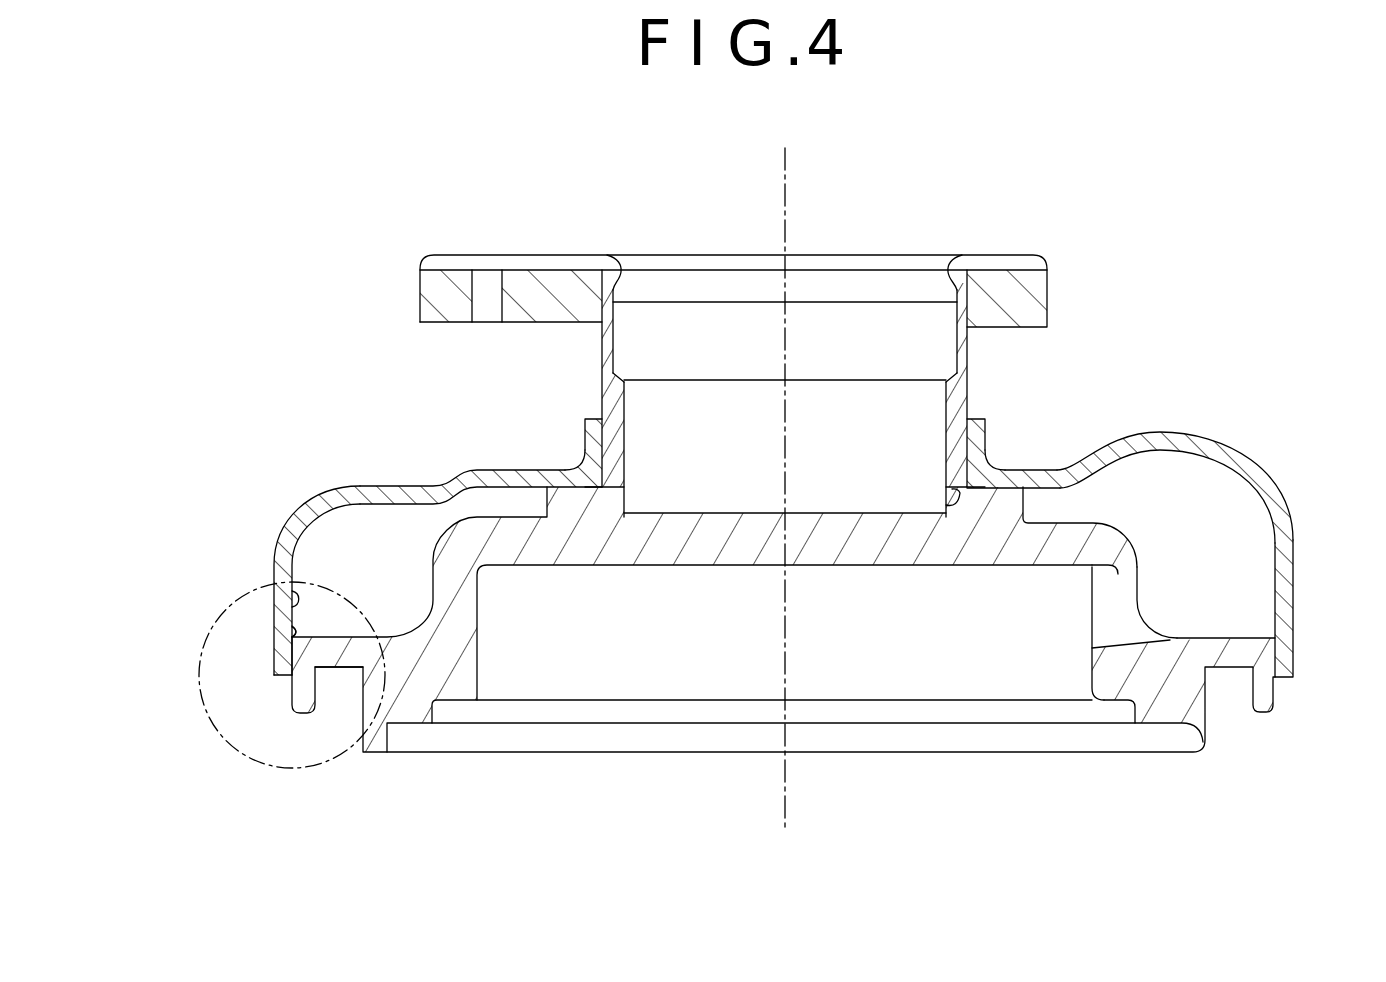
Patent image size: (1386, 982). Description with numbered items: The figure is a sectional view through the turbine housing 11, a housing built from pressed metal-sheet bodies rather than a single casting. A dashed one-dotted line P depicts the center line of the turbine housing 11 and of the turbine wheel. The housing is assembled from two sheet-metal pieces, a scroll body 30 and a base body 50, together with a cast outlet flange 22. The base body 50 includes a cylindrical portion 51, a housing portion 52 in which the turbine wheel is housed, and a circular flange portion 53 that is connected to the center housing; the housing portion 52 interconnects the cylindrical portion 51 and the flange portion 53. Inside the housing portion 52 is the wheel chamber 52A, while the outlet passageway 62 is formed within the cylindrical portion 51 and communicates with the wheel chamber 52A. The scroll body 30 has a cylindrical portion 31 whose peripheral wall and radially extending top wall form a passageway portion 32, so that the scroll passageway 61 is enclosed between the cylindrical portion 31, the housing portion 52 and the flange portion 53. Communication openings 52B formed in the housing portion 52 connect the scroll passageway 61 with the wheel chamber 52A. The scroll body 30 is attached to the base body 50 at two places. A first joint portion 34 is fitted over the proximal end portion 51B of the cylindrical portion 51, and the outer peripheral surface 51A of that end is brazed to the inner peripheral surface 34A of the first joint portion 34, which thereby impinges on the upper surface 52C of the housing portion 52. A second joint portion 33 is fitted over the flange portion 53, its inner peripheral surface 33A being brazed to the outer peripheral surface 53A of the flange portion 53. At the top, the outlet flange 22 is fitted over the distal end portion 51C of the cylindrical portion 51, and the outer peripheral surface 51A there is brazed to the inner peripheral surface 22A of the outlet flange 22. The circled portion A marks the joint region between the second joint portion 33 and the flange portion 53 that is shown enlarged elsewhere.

The turbine housing 11 is at (1200, 295).
The outlet flange 22 is at (765, 257).
The inner peripheral surface of the outlet flange 22A is at (607, 256).
The scroll body 30 is at (753, 520).
The cylindrical portion of the scroll body 31 is at (1170, 432).
The passageway portion 32 is at (1296, 598).
The second joint portion 33 is at (274, 655).
The inner peripheral surface of the second joint portion 33A is at (276, 592).
The first joint portion 34 is at (594, 421).
The inner peripheral surface of the first joint portion 34A is at (598, 446).
The base body 50 is at (783, 511).
The cylindrical portion of the base body 51 is at (785, 393).
The outer peripheral surface 51A is at (607, 487).
The proximal end portion 51B is at (620, 430).
The distal end portion 51C is at (613, 340).
The housing portion 52 is at (783, 613).
The wheel chamber 52A is at (768, 653).
The communication openings 52B is at (1093, 571).
The upper surface of the housing portion 52C is at (950, 486).
The flange portion 53 is at (330, 643).
The outer peripheral surface of the flange portion 53A is at (296, 608).
The scroll passageway 61 is at (1212, 562).
The outlet passageway 62 is at (844, 453).
The center line P is at (790, 184).
The portion A is at (230, 742).